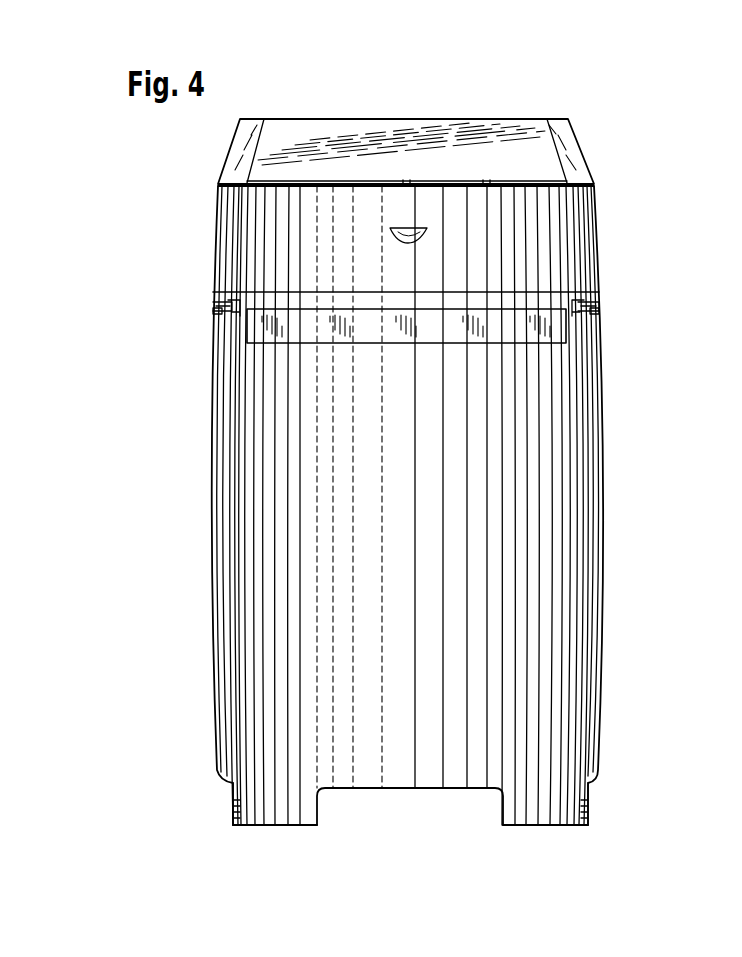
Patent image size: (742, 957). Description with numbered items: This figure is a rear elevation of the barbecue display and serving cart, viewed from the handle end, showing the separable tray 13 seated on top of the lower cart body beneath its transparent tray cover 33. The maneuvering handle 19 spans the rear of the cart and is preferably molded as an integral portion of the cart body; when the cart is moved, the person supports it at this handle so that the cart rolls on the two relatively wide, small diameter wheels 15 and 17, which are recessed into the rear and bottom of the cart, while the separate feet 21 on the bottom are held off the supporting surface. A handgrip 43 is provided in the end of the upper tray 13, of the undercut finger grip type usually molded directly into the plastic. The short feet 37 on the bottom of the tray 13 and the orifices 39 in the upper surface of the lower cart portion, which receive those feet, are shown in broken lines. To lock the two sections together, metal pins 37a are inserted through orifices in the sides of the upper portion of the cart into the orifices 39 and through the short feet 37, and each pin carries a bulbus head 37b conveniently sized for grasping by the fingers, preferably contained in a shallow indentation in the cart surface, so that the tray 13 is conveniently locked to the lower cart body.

The tray 13 is at (598, 198).
The transparent tray cover 33 is at (490, 127).
The handle 19 is at (382, 333).
The handgrip 43 is at (418, 240).
The short feet 37 is at (214, 306).
The metal pin 37a is at (200, 280).
The bulbus head 37b is at (600, 312).
The orifices 39 is at (215, 313).
The wheel 17 is at (232, 815).
The wheel 15 is at (590, 815).
The feet 21 is at (278, 824).